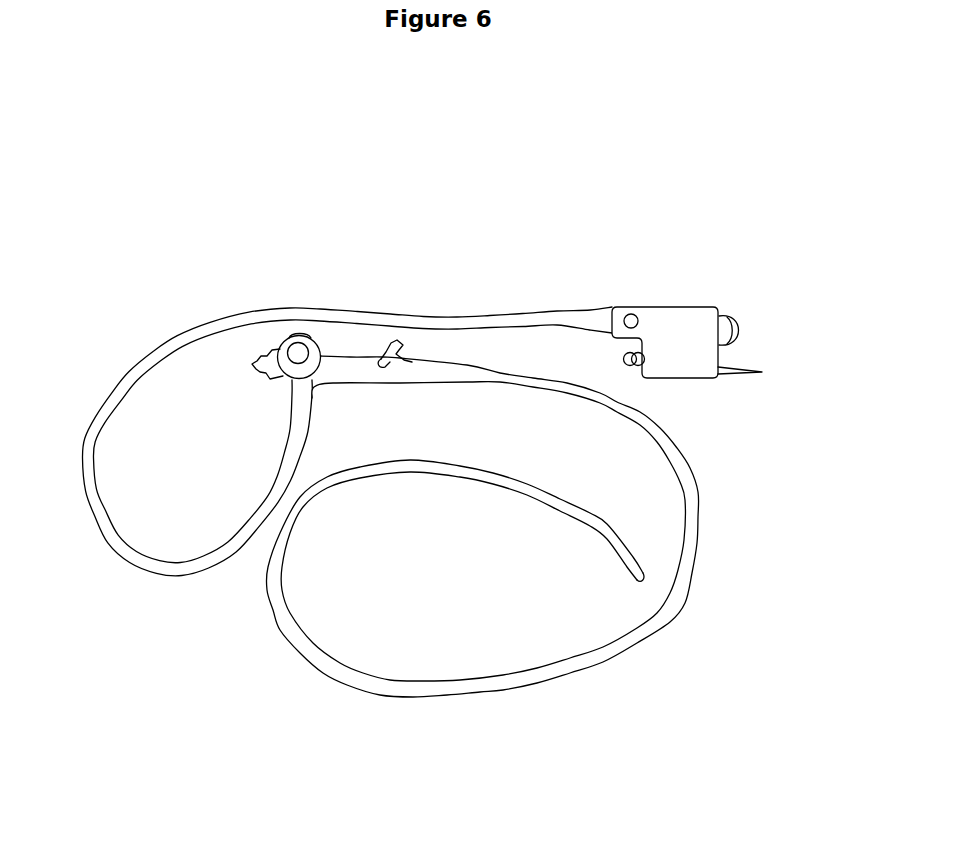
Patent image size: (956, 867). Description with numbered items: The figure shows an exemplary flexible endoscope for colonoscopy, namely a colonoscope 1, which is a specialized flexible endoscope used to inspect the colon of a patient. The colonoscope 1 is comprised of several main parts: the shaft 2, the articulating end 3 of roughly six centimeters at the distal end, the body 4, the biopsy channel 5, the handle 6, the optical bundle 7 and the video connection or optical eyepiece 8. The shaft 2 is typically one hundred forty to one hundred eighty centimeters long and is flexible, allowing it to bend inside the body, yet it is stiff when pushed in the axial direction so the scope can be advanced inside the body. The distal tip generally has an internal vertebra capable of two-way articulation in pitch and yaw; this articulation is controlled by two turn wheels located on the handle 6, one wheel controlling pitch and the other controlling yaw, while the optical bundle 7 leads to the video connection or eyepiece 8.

The colonoscope 1 is at (426, 456).
The shaft 2 is at (256, 629).
The articulating end 3 is at (623, 600).
The body 4 is at (439, 291).
The biopsy channel 5 is at (420, 341).
The handle 6 is at (270, 322).
The optical bundle 7 is at (690, 282).
The video connection/optical eyepiece 8 is at (693, 345).